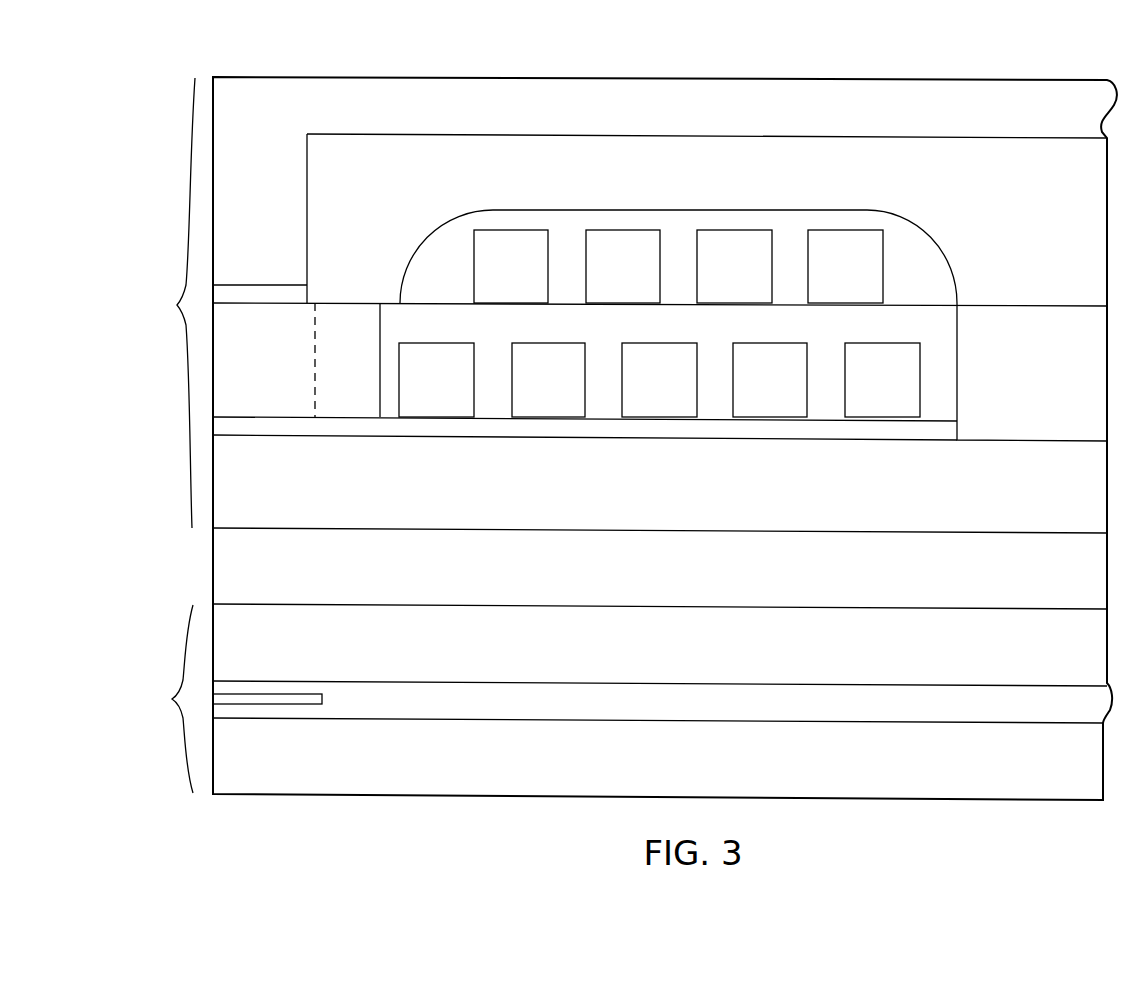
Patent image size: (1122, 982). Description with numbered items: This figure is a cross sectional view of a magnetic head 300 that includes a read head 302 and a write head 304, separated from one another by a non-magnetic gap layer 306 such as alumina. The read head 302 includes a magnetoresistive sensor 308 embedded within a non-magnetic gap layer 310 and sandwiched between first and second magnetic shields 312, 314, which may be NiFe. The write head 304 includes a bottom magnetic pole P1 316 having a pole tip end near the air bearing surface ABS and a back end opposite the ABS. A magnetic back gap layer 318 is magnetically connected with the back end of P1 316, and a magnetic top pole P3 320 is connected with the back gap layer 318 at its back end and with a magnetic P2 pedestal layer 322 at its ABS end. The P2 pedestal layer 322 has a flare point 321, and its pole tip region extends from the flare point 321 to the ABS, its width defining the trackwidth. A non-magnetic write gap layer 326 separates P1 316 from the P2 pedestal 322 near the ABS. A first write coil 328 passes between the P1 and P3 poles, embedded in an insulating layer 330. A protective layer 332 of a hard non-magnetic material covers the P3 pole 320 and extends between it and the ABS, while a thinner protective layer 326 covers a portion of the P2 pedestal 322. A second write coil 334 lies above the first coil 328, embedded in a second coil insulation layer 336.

The magnetic head 300 is at (665, 50).
The read head 302 is at (182, 633).
The write head 304 is at (190, 214).
The non-magnetic gap layer 306 is at (712, 569).
The magnetoresistive sensor 308 is at (322, 699).
The non-magnetic gap layer 310 is at (711, 701).
The first magnetic shield 312 is at (714, 759).
The second magnetic shield 314 is at (712, 641).
The bottom magnetic pole P1 316 is at (716, 483).
The magnetic back gap layer 318 is at (1070, 372).
The magnetic top pole P3 320 is at (715, 174).
The flare point 321 is at (315, 318).
The P2 pedestal layer 322 is at (253, 380).
The non-magnetic write gap layer 326 is at (270, 297).
The first write coil 328 is at (786, 433).
The insulating layer 330 is at (603, 380).
The protective layer 332 is at (721, 108).
The second write coil 334 is at (600, 218).
The second coil insulation layer 336 is at (702, 222).
The air bearing surface ABS is at (212, 565).